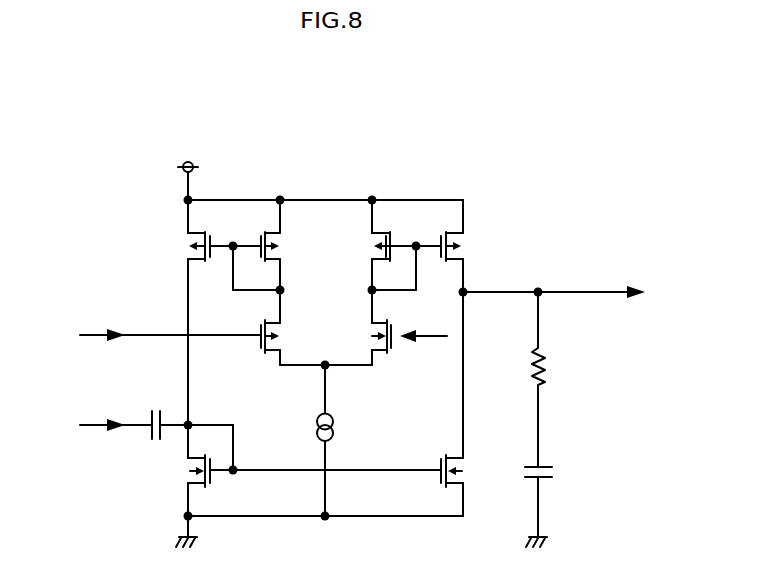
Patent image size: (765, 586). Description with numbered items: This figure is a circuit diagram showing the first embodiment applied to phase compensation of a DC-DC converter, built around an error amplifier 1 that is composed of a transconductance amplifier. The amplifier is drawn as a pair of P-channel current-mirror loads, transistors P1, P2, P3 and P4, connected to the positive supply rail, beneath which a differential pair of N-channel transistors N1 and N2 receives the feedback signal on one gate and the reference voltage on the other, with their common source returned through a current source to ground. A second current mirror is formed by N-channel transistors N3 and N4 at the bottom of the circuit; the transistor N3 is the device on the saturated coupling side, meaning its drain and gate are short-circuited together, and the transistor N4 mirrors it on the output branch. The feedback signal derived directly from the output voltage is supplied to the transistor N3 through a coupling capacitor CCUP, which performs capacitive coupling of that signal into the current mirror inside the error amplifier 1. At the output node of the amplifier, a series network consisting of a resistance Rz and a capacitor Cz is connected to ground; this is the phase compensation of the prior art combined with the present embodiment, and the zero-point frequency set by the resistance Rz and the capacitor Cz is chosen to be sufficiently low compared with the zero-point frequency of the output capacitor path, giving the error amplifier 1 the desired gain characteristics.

The error amplifier 1 is at (347, 168).
The P-channel MOS transistor P1 is at (271, 246).
The P-channel MOS transistor P2 is at (379, 246).
The P-channel MOS transistor P3 is at (196, 246).
The P-channel MOS transistor P4 is at (453, 246).
The N-channel MOS transistor (differential pair, gm1) N1 is at (261, 342).
The N-channel MOS transistor (differential pair, gm1) N2 is at (386, 342).
The N-channel MOS transistor N3 is at (184, 471).
The N-channel MOS transistor (gm2) N4 is at (466, 471).
The coupling capacitor CCUP is at (139, 433).
The resistance Rz is at (558, 366).
The capacitor Cz is at (555, 473).